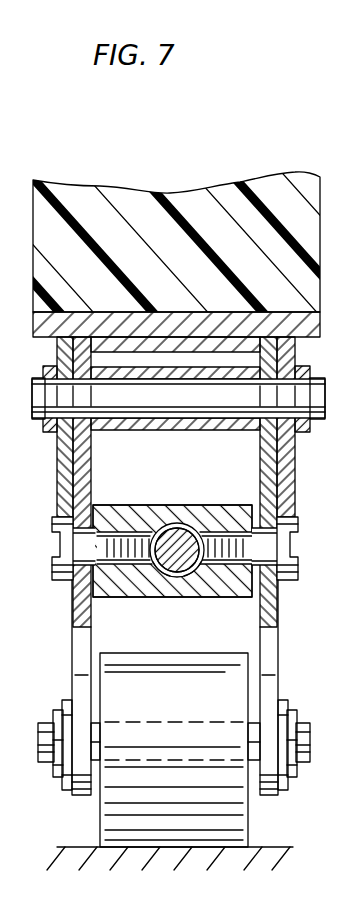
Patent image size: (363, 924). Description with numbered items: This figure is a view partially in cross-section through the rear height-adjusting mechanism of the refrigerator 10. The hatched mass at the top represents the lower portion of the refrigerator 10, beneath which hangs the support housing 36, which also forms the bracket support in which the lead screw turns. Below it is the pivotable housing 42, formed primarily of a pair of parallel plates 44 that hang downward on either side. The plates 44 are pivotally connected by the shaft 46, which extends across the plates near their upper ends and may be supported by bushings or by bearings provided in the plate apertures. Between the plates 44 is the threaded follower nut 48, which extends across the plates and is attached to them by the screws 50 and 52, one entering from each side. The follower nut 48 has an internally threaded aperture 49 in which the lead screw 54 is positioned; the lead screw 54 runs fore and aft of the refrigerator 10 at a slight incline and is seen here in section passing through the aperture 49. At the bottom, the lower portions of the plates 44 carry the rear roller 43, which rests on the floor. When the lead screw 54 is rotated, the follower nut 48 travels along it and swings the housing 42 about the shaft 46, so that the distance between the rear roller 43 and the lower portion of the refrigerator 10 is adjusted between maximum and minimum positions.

The refrigerator 10 is at (233, 179).
The support housing 36 is at (58, 478).
The housing 42 is at (276, 468).
The rear roller 43 is at (185, 713).
The parallel plates 44 is at (72, 653).
The shaft 46 is at (173, 408).
The threaded follower nut 48 is at (144, 512).
The internally threaded aperture 49 is at (180, 526).
The screw 50 is at (300, 529).
The screw 52 is at (52, 533).
The lead screw 54 is at (178, 562).